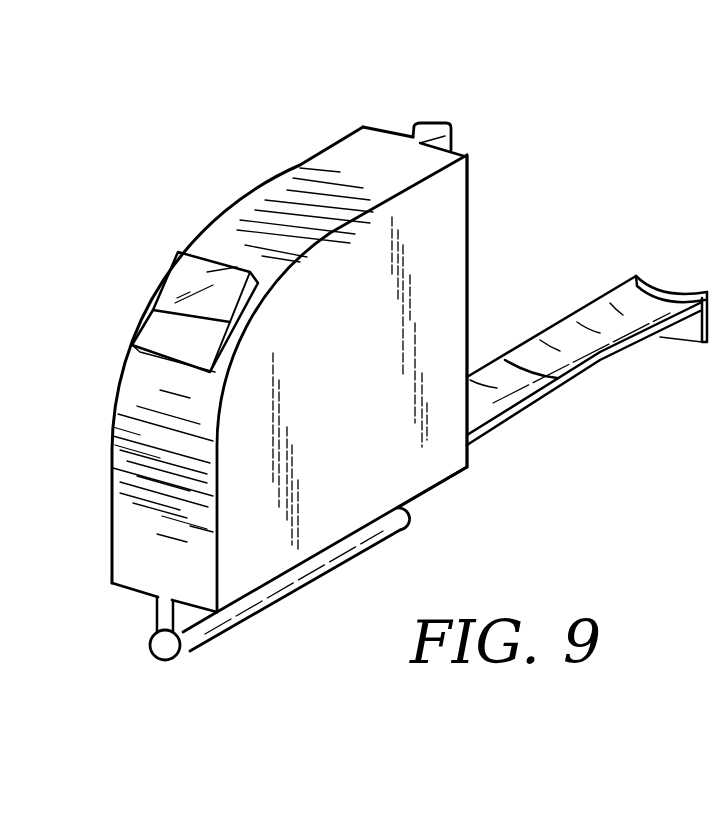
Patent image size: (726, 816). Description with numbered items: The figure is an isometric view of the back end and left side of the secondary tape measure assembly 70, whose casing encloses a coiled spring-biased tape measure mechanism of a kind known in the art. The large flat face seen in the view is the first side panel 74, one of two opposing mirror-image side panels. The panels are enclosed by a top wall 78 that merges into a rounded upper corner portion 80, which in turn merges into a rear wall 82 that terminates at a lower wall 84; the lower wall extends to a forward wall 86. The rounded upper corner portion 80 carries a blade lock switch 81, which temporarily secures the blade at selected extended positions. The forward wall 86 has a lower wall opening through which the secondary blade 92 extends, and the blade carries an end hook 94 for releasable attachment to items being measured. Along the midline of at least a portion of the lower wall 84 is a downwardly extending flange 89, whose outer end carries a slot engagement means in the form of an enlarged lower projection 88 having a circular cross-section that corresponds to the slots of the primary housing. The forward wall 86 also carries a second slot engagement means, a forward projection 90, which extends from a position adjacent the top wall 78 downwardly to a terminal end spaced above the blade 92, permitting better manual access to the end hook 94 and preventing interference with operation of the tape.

The secondary tape measure assembly 70 is at (203, 170).
The first side panel 74 is at (378, 455).
The top wall 78 is at (360, 157).
The rounded upper corner portion 80 is at (150, 302).
The blade lock switch 81 is at (150, 322).
The rear wall 82 is at (128, 519).
The lower wall 84 is at (128, 590).
The forward wall 86 is at (468, 188).
The lower projection 88 is at (272, 595).
The flange 89 is at (183, 622).
The forward projection 90 is at (452, 147).
The secondary blade 92 is at (592, 318).
The end hook 94 is at (688, 335).